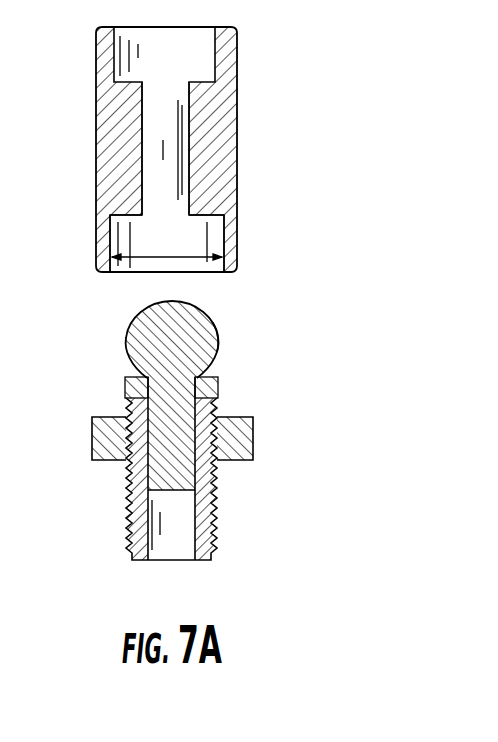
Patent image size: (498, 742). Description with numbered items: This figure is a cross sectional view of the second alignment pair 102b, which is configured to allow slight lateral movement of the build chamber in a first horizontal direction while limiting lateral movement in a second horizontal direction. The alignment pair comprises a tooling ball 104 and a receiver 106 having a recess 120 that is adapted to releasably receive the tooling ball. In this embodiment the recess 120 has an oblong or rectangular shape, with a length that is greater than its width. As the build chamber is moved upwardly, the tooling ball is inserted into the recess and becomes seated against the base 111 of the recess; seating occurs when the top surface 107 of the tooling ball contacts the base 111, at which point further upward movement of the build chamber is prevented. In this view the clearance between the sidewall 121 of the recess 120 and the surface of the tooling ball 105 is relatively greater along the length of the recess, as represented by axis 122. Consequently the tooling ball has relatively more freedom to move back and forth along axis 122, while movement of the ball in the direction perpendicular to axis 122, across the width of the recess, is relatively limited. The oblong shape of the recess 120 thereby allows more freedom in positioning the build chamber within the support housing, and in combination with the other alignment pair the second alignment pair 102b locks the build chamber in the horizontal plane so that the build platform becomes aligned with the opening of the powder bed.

The second alignment pair 102b is at (320, 35).
The tooling ball 104 is at (125, 388).
The tooling ball 105 is at (218, 350).
The receiver 106 is at (96, 160).
The top surface 107 is at (172, 294).
The base 111 is at (190, 220).
The recess 120 is at (126, 285).
The sidewall 121 is at (177, 250).
The axis 122 is at (180, 262).